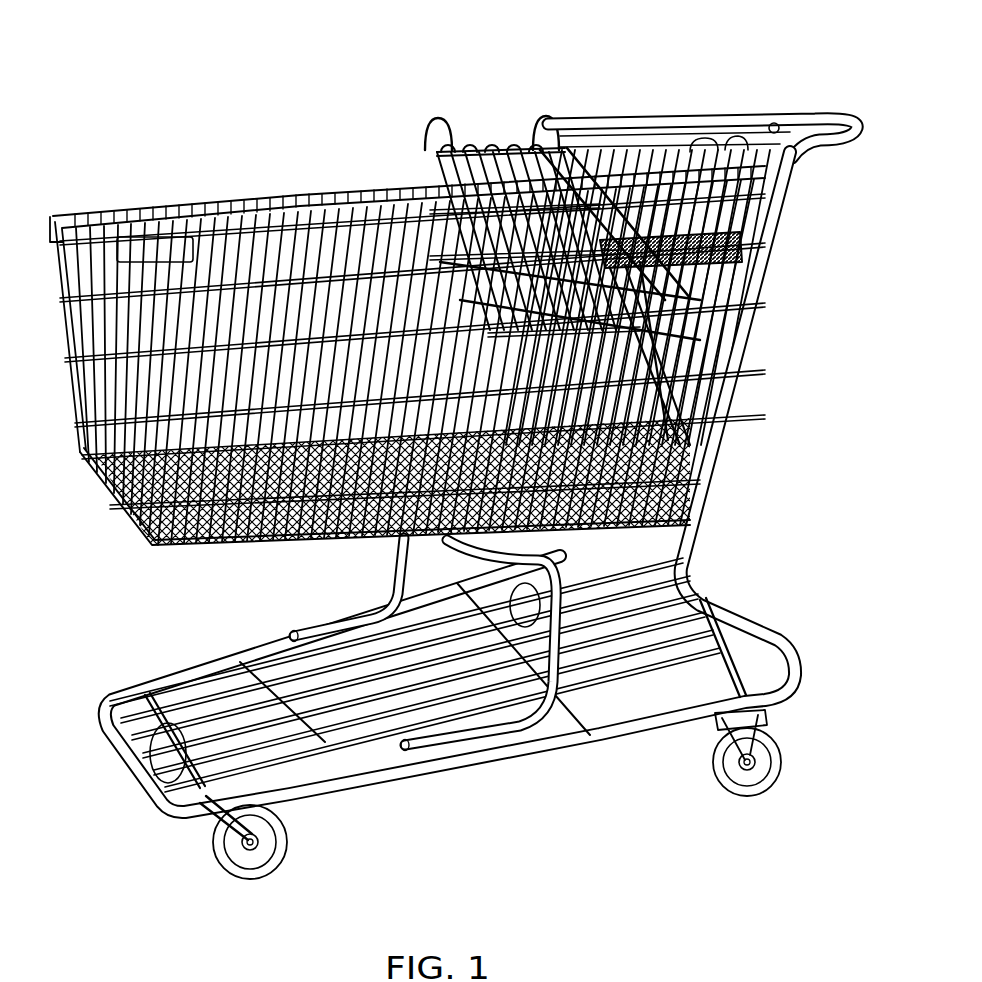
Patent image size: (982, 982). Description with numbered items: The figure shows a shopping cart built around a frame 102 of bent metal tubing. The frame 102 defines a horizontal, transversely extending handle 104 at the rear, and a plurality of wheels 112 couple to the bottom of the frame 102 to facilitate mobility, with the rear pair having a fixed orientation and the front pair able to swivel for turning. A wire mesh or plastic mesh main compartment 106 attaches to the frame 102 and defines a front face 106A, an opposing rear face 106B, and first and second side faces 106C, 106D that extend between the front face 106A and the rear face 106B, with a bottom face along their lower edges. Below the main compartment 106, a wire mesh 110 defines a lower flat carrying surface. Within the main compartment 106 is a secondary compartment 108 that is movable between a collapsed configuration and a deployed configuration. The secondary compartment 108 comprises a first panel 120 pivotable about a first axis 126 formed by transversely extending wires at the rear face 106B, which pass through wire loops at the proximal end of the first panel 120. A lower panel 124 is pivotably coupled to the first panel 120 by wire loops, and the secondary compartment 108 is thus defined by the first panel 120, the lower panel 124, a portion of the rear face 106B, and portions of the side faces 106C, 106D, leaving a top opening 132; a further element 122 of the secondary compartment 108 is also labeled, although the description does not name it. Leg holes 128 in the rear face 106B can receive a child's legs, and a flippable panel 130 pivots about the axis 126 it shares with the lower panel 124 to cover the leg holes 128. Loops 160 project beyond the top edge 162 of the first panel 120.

The frame 102 is at (481, 423).
The handle 104 is at (692, 113).
The main compartment 106 is at (407, 305).
The front face 106A is at (100, 210).
The rear face 106B is at (677, 460).
The first side face 106C is at (404, 190).
The second side face 106D is at (357, 185).
The secondary compartment 108 is at (611, 222).
The wire mesh 110 is at (247, 663).
The wheels 112 is at (777, 757).
The first panel 120 is at (506, 150).
The seat support legs 122 is at (693, 413).
The lower panel 124 is at (740, 298).
The first axis 126 is at (660, 233).
The leg holes 128 is at (660, 145).
The flippable panel 130 is at (690, 200).
The top opening 132 is at (540, 78).
The loops 160 is at (425, 128).
The top edge 162 is at (432, 122).